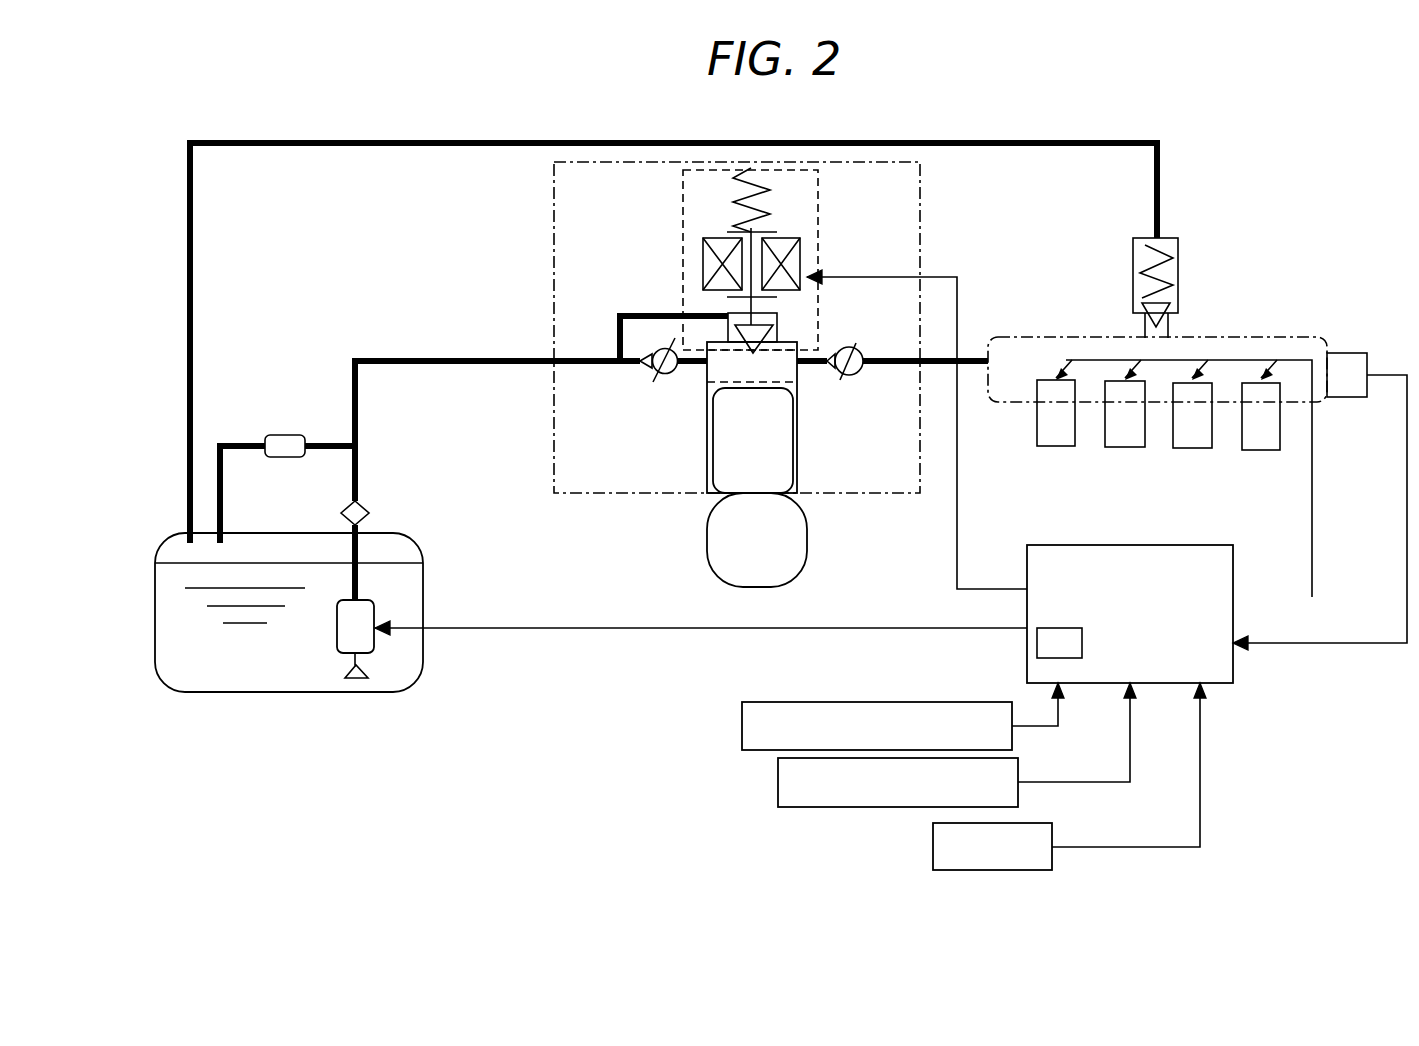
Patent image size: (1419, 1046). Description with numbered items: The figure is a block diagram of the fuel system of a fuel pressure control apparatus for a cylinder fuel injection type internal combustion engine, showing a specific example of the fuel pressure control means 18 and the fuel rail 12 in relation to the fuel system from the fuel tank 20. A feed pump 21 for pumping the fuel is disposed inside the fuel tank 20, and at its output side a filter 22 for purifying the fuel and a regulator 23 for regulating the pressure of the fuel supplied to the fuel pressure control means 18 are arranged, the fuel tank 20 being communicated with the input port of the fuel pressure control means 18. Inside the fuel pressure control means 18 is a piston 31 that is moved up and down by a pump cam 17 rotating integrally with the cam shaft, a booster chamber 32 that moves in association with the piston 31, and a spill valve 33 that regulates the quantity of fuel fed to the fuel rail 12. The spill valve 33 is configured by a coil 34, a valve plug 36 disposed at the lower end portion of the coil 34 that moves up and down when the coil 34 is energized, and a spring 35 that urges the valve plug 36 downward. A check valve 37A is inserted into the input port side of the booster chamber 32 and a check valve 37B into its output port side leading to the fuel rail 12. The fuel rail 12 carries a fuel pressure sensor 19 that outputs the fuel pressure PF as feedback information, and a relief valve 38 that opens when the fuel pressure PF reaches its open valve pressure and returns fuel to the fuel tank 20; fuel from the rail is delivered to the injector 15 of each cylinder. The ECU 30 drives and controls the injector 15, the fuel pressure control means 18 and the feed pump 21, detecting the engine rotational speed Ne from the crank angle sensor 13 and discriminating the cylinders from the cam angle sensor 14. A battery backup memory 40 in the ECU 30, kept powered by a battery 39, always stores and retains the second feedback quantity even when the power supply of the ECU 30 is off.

The fuel rail 12 is at (1252, 337).
The crank angle sensor 13 is at (742, 728).
The cam angle sensor 14 is at (778, 784).
The injector 15 is at (1190, 448).
The pump cam 17 is at (807, 555).
The fuel pressure control means 18 is at (920, 228).
The fuel pressure sensor 19 is at (1350, 353).
The fuel tank 20 is at (270, 690).
The feed pump 21 is at (375, 650).
The filter 22 is at (365, 508).
The regulator 23 is at (283, 435).
The ECU 30 is at (1225, 670).
The piston 31 is at (780, 440).
The booster chamber 32 is at (733, 365).
The spill valve 33 is at (818, 243).
The coil 34 is at (703, 262).
The spring 35 is at (728, 212).
The valve plug 36 is at (777, 325).
The check valve 37A is at (655, 372).
The check valve 37B is at (852, 372).
The relief valve 38 is at (1178, 262).
The battery 39 is at (933, 849).
The battery backup memory 40 is at (1037, 645).